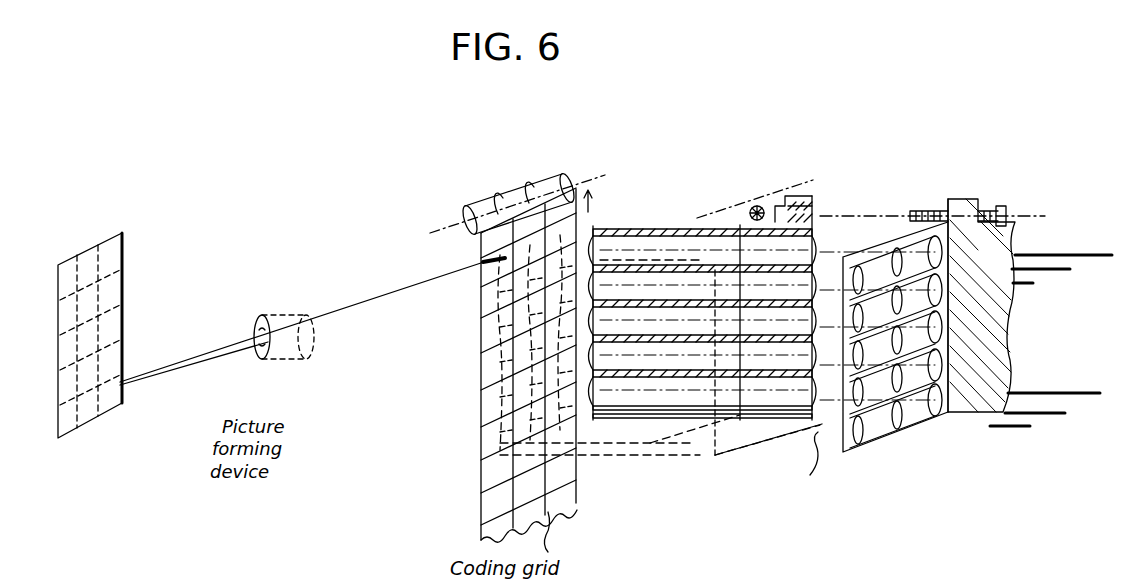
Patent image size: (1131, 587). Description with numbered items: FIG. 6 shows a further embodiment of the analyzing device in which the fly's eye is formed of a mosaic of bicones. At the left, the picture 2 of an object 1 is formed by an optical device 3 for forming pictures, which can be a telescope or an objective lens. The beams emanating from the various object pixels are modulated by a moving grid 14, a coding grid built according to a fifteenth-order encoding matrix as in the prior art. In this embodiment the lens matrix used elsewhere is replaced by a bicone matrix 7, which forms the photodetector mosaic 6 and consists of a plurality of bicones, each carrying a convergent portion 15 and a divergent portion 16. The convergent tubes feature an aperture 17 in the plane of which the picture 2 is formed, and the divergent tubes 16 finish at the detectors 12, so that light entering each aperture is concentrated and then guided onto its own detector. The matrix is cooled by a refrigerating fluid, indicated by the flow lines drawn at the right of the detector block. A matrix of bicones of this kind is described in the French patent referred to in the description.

The object 1 is at (122, 290).
The picture 2 is at (292, 356).
The optical device 3 is at (314, 338).
The photodetector mosaic 6 is at (851, 294).
The bicone matrix 7 is at (668, 388).
The detectors 12 is at (955, 216).
The moving grid 14 is at (574, 192).
The convergent portion 15 is at (673, 243).
The divergent portion 16 is at (776, 392).
The aperture 17 is at (597, 233).